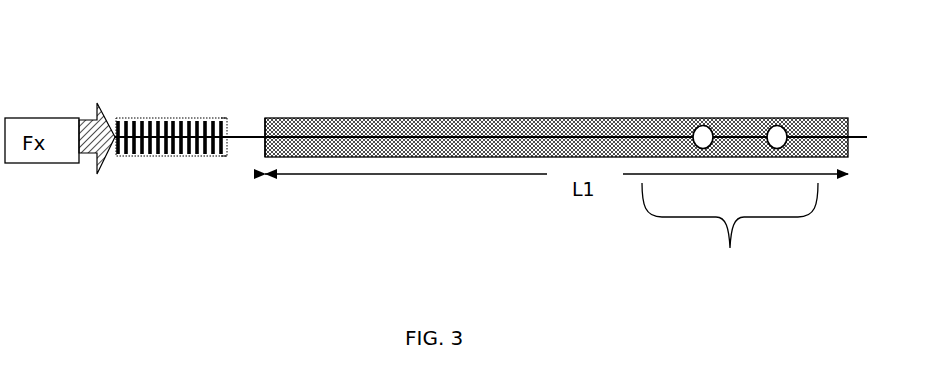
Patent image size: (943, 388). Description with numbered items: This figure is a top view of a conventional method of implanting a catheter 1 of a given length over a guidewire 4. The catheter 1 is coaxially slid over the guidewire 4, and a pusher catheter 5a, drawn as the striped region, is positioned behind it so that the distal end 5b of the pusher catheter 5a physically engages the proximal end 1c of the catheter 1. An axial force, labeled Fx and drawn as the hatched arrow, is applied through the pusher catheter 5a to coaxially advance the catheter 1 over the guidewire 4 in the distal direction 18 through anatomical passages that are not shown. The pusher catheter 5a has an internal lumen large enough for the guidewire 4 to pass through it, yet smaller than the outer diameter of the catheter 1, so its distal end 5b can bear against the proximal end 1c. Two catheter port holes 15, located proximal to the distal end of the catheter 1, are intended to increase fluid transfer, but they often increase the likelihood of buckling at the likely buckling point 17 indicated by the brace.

The catheter 1 is at (494, 116).
The proximal end 1c is at (264, 120).
The guidewire 4 is at (237, 133).
The pusher catheter 5a is at (176, 157).
The distal end 5b is at (230, 158).
The catheter port holes 15 is at (708, 123).
The likely buckling point 17 is at (730, 233).
The distal direction 18 is at (92, 100).